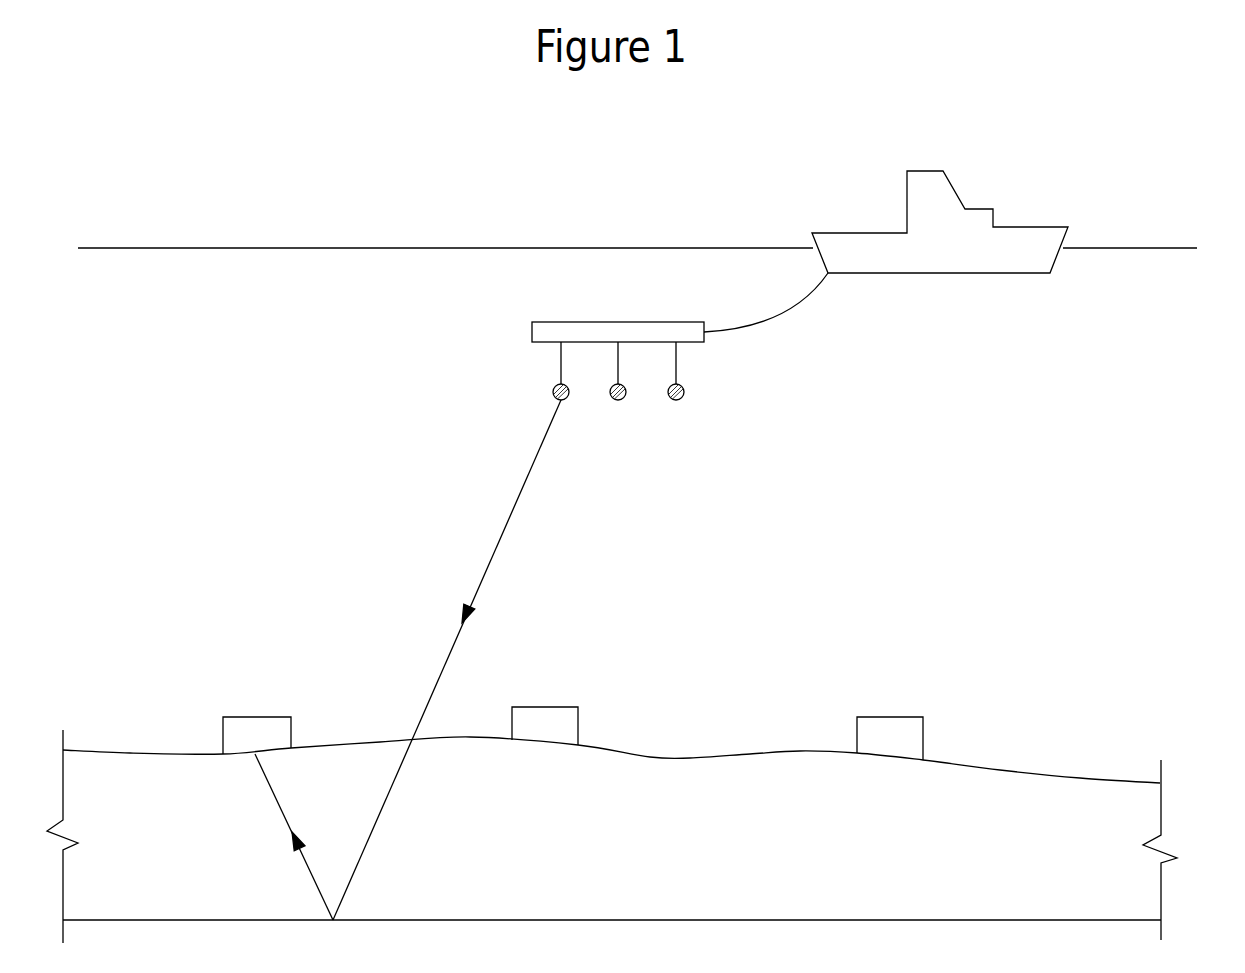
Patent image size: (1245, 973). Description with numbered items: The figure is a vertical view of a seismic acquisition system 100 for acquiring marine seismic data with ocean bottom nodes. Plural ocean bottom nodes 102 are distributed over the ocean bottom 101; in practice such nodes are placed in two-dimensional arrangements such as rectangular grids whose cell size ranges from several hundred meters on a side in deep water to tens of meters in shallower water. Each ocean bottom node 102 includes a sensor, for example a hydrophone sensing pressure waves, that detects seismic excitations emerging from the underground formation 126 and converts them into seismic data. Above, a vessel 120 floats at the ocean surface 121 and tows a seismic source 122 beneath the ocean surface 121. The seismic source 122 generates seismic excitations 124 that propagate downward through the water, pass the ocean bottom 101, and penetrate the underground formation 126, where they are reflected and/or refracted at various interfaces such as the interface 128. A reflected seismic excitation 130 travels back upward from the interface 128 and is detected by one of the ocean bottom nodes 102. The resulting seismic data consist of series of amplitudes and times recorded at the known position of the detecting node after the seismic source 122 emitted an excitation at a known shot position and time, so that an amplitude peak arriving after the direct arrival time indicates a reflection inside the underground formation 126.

The seismic acquisition system 100 is at (1138, 96).
The ocean bottom 101 is at (1000, 773).
The ocean bottom node 102 is at (261, 697).
The vessel 120 is at (972, 190).
The ocean surface 121 is at (288, 248).
The seismic source 122 is at (622, 302).
The seismic excitation 124 is at (489, 558).
The underground formation 126 is at (770, 858).
The interface 128 is at (482, 920).
The reflected seismic excitation 130 is at (312, 878).